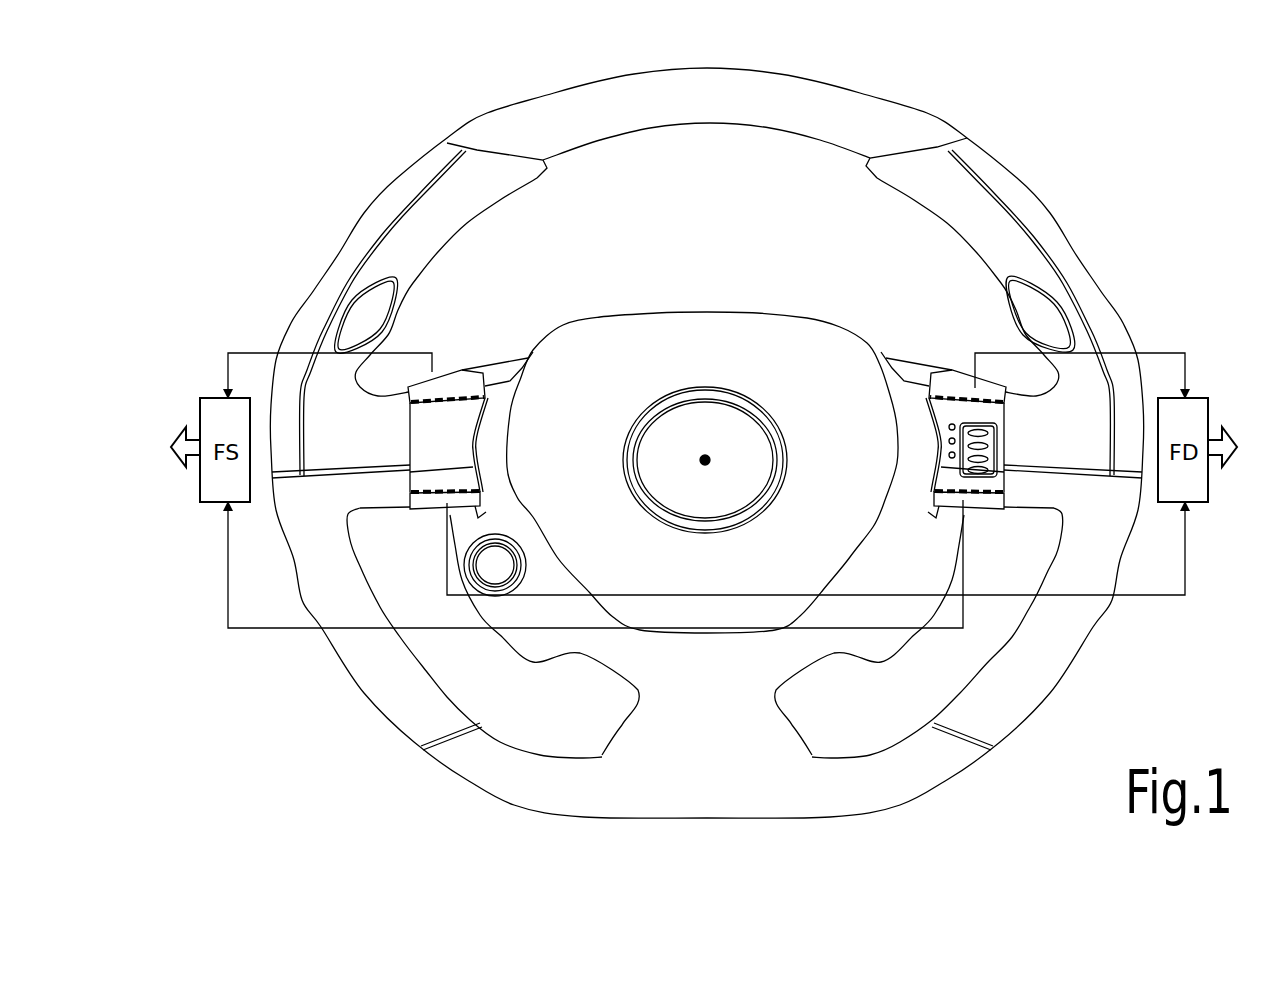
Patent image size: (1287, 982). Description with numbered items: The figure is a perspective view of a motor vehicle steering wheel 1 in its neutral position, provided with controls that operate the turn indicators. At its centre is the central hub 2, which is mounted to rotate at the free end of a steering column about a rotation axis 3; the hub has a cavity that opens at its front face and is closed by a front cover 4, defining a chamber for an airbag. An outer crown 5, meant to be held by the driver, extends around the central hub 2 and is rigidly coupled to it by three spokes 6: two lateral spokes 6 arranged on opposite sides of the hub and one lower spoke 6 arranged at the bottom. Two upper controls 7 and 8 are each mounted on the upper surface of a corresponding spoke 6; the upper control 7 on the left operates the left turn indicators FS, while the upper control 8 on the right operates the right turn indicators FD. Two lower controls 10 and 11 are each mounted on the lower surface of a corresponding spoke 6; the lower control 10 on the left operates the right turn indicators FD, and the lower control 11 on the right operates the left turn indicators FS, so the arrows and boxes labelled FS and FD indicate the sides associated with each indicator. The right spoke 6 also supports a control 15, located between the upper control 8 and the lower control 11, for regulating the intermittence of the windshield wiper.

The steering wheel 1 is at (290, 175).
The central hub 2 is at (696, 278).
The rotation axis 3 is at (705, 455).
The front cover 4 is at (803, 367).
The outer crown 5 is at (368, 655).
The spoke 6 is at (372, 490).
The upper control 7 is at (441, 387).
The upper control 8 is at (962, 387).
The lower control 10 is at (427, 506).
The lower control 11 is at (976, 492).
The control 15 is at (1010, 440).